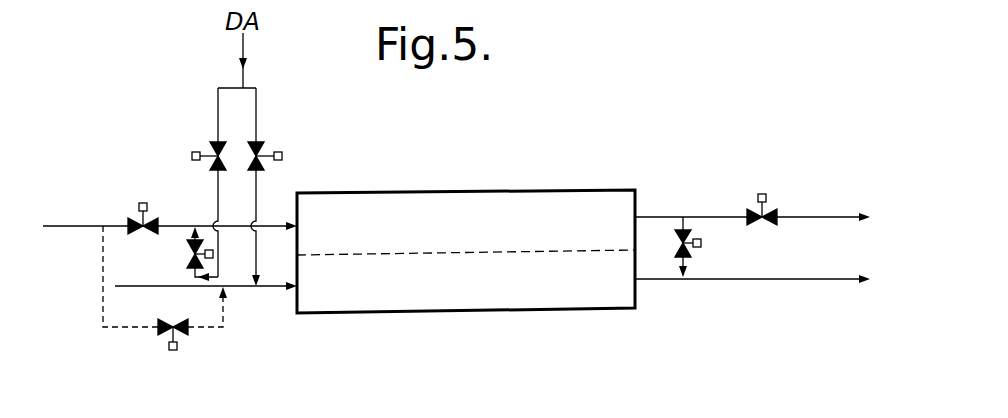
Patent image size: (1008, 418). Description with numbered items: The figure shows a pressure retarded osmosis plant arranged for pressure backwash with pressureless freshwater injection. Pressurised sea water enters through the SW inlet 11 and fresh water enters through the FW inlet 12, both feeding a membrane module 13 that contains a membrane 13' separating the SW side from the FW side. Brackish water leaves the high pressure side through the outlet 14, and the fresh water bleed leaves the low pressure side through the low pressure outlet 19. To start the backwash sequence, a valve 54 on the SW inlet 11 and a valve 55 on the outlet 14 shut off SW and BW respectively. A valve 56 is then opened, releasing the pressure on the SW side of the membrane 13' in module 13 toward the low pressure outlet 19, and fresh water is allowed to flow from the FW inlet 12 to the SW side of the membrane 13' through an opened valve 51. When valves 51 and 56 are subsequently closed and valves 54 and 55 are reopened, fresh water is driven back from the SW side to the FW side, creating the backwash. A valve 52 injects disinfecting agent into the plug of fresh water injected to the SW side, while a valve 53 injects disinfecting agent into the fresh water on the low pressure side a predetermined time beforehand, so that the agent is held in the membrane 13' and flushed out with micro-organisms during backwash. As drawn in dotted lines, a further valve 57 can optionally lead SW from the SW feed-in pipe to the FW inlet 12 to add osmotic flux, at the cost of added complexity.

The SW inlet 11 is at (117, 226).
The FW inlet 12 is at (166, 286).
The membrane module 13 is at (466, 217).
The membrane 13' is at (466, 320).
The outlet 14 is at (650, 217).
The low pressure outlet 19 is at (658, 280).
The valve 51 is at (187, 250).
The valve 52 is at (212, 142).
The valve 53 is at (262, 142).
The valve 54 is at (156, 218).
The valve 55 is at (775, 210).
The valve 56 is at (681, 230).
The further valve 57 is at (188, 333).